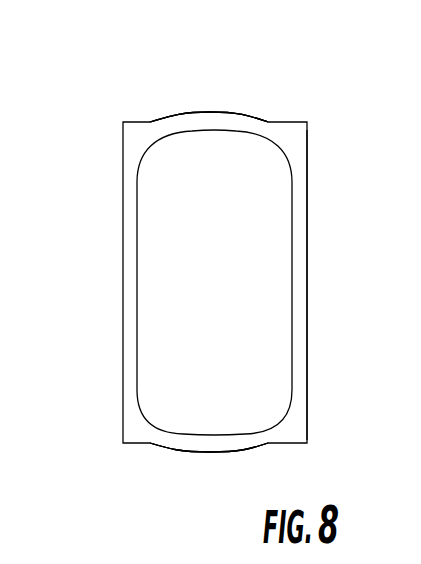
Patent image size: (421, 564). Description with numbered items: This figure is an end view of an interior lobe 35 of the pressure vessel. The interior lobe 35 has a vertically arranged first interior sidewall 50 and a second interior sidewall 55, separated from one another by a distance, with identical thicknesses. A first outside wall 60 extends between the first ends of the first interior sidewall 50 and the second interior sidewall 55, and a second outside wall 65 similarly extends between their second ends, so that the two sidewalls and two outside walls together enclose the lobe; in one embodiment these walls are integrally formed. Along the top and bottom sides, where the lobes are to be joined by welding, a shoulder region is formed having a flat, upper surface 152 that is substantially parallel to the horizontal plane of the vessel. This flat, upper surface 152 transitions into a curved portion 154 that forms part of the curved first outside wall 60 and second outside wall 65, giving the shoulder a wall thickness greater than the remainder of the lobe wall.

The interior lobe 35 is at (81, 308).
The flat, upper surface 152 is at (132, 119).
The second interior sidewall 55 is at (302, 196).
The first interior sidewall 50 is at (131, 226).
The first outside wall 60 is at (203, 113).
The second outside wall 65 is at (197, 443).
The curved portion 154 is at (260, 39).